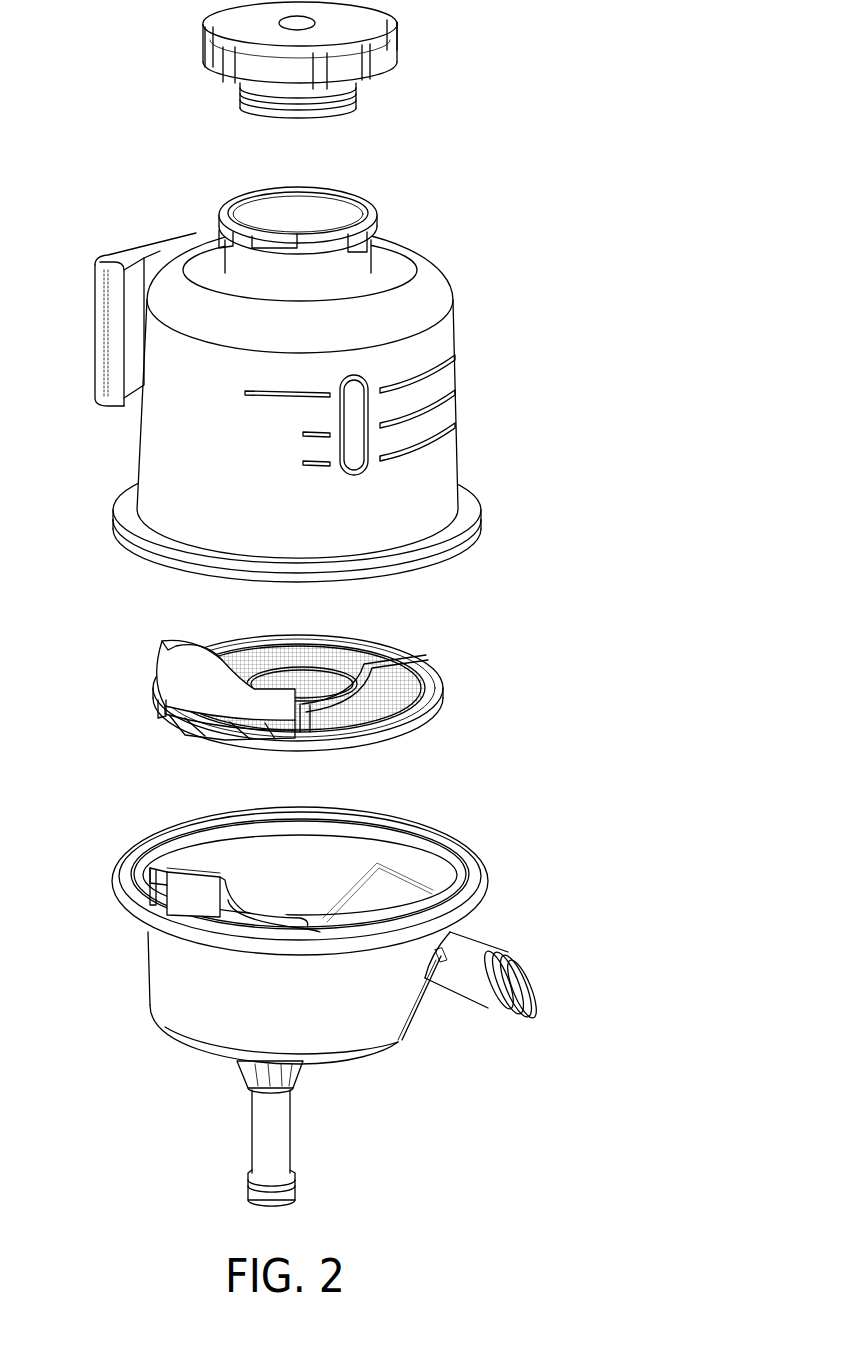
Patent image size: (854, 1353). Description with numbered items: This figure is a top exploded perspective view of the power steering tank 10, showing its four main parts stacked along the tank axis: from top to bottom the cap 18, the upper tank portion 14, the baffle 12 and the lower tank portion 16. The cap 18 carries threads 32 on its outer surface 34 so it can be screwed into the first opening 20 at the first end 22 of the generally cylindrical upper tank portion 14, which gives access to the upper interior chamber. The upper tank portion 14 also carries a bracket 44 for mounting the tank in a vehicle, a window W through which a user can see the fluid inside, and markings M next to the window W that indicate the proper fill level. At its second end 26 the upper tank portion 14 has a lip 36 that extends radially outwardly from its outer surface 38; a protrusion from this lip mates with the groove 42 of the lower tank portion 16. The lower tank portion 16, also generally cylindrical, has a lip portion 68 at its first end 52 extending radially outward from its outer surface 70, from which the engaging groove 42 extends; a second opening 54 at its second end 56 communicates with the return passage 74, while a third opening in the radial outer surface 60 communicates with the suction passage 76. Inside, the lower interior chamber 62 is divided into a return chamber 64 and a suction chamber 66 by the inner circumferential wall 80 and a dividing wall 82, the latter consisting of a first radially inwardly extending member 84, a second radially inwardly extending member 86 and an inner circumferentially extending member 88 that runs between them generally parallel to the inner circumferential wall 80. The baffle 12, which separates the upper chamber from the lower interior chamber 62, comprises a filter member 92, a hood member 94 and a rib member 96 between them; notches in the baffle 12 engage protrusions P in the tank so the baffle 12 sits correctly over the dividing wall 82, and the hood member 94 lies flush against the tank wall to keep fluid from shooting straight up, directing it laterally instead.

The power steering tank 10 is at (554, 391).
The baffle 12 is at (297, 679).
The upper tank portion 14 is at (284, 355).
The lower tank portion 16 is at (302, 980).
The cap 18 is at (398, 33).
The first opening 20 is at (333, 206).
The first end 22 is at (378, 214).
The second end 26 is at (478, 526).
The threads 32 is at (357, 96).
The outer surface 34 is at (240, 106).
The lip 36 is at (475, 497).
The outer surface 38 is at (440, 458).
The groove 42 is at (465, 875).
The bracket 44 is at (96, 338).
The first end 52 is at (165, 1033).
The second opening 54 is at (400, 848).
The second end 56 is at (484, 884).
The radial outer surface 60 is at (446, 960).
The lower interior chamber 62 is at (303, 855).
The return chamber 64 is at (192, 894).
The suction chamber 66 is at (226, 858).
The lip portion 68 is at (113, 890).
The outer surface 70 is at (158, 970).
The return passage 74 is at (295, 1156).
The suction passage 76 is at (518, 1000).
The inner circumferential wall 80 is at (243, 858).
The dividing wall 82 is at (250, 903).
The first radially inwardly extending member 84 is at (312, 925).
The second radially inwardly extending member 86 is at (183, 862).
The inner circumferentially extending member 88 is at (288, 915).
The filter member 92 is at (443, 710).
The hood member 94 is at (166, 660).
The rib member 96 is at (155, 700).
The window W is at (352, 412).
The markings M is at (316, 468).
The protrusions P is at (148, 855).